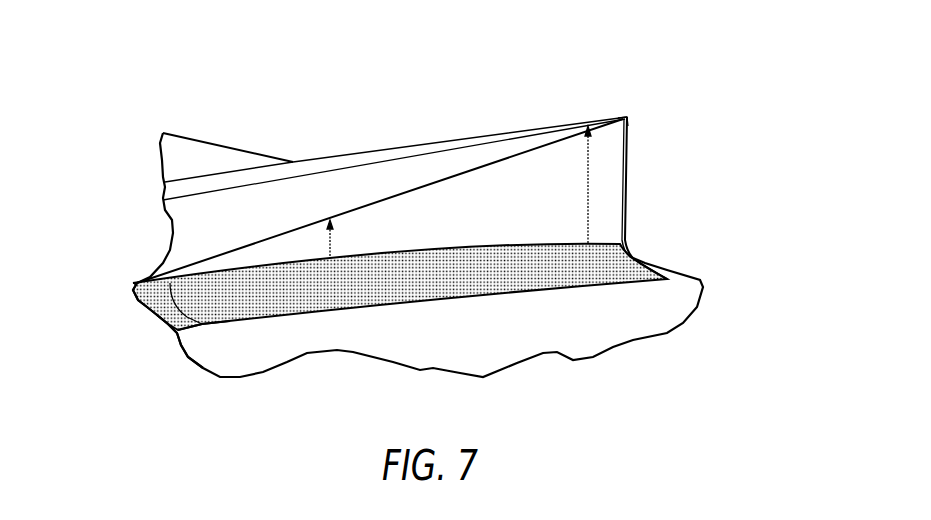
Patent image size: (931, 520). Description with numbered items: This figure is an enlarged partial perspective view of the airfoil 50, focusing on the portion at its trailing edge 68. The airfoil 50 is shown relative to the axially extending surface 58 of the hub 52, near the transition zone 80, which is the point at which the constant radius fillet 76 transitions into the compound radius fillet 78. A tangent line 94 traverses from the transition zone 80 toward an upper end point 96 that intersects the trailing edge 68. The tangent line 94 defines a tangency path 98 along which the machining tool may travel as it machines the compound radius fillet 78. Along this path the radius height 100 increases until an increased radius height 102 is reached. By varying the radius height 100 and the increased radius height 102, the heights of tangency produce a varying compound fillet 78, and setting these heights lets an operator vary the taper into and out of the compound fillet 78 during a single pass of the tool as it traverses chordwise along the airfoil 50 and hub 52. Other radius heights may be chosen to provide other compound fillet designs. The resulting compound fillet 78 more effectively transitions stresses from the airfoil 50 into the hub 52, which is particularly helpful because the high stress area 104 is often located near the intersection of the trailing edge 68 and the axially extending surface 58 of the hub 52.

The airfoil 50 is at (325, 195).
The hub 52 is at (195, 347).
The axially extending surface 58 is at (645, 330).
The trailing edge 68 is at (627, 187).
The constant radius fillet 76 is at (140, 303).
The compound radius fillet 78 is at (515, 272).
The transition zone 80 is at (202, 323).
The tangent line 94 is at (477, 168).
The upper end point 96 is at (627, 117).
The tangency path 98 is at (367, 208).
The radius height 100 is at (331, 245).
The increased radius height 102 is at (588, 167).
The high stress area 104 is at (637, 260).